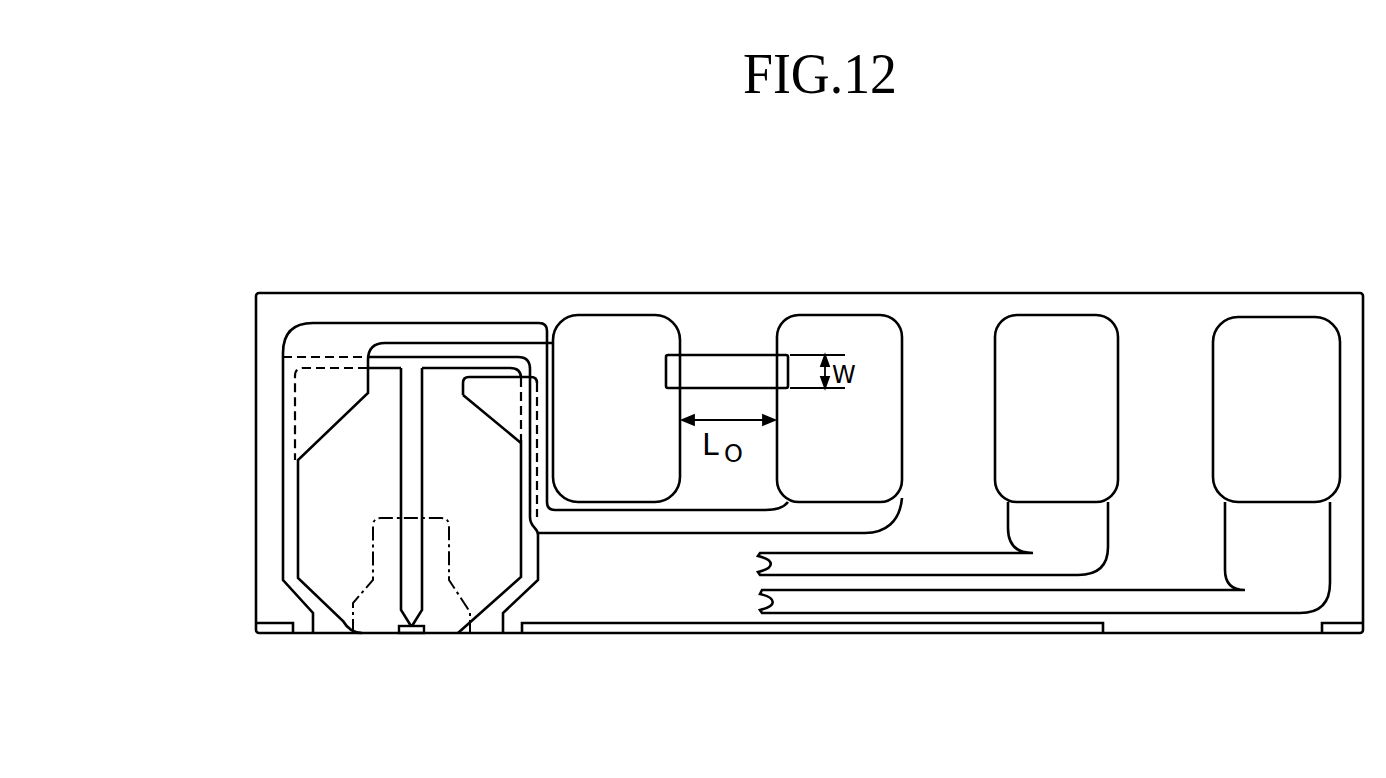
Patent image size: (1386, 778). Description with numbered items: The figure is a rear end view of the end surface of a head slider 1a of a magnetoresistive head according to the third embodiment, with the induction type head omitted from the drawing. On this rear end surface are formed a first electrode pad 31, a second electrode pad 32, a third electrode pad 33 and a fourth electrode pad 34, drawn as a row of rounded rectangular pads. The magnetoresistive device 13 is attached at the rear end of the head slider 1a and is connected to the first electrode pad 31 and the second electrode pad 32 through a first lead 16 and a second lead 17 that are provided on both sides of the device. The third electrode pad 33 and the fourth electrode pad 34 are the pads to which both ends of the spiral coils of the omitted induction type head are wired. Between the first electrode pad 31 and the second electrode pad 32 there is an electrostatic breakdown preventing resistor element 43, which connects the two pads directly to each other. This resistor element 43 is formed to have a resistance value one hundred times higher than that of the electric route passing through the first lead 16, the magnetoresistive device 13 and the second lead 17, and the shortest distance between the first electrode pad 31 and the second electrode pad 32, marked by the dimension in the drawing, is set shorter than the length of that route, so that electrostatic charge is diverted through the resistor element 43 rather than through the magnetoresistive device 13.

The head slider 1a is at (825, 292).
The magnetoresistive device 13 is at (411, 627).
The first lead 16 is at (480, 593).
The second lead 17 is at (320, 520).
The first electrode pad 31 is at (603, 337).
The second electrode pad 32 is at (870, 345).
The third electrode pad 33 is at (1041, 352).
The fourth electrode pad 34 is at (1260, 352).
The electrostatic breakdown preventing resistor element 43 is at (722, 350).